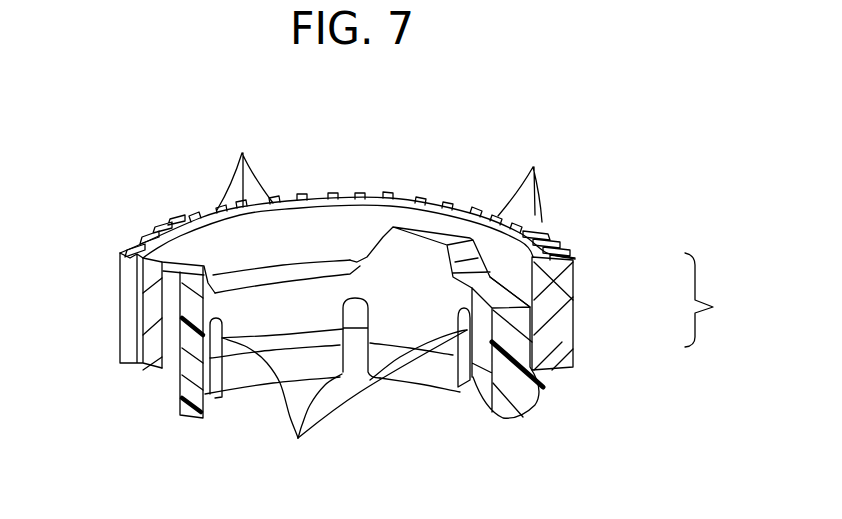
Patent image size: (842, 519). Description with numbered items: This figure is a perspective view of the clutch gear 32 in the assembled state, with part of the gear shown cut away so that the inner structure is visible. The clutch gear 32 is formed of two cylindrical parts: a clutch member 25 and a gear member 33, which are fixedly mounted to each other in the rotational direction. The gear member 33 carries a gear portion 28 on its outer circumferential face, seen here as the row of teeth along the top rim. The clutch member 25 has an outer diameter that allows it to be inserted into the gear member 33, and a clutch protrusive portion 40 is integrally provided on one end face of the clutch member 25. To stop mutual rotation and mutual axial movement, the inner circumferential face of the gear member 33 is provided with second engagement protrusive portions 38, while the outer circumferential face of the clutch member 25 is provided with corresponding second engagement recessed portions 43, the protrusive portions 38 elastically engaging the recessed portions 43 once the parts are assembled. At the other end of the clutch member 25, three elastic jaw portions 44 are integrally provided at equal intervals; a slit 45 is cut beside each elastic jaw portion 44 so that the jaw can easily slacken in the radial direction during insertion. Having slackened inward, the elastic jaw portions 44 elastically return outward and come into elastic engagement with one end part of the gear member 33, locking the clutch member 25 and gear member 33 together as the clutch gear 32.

The clutch member 25 is at (517, 342).
The gear portion 28 is at (350, 187).
The clutch gear 32 is at (728, 300).
The gear member 33 is at (557, 286).
The second engagement protrusive portion 38 is at (173, 308).
The clutch protrusive portion 40 is at (180, 268).
The second engagement recessed portion 43 is at (175, 307).
The elastic jaw portion 44 is at (537, 403).
The slit 45 is at (345, 408).